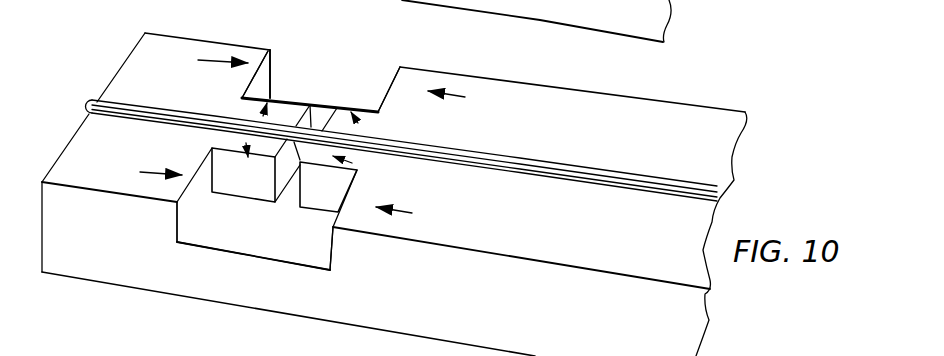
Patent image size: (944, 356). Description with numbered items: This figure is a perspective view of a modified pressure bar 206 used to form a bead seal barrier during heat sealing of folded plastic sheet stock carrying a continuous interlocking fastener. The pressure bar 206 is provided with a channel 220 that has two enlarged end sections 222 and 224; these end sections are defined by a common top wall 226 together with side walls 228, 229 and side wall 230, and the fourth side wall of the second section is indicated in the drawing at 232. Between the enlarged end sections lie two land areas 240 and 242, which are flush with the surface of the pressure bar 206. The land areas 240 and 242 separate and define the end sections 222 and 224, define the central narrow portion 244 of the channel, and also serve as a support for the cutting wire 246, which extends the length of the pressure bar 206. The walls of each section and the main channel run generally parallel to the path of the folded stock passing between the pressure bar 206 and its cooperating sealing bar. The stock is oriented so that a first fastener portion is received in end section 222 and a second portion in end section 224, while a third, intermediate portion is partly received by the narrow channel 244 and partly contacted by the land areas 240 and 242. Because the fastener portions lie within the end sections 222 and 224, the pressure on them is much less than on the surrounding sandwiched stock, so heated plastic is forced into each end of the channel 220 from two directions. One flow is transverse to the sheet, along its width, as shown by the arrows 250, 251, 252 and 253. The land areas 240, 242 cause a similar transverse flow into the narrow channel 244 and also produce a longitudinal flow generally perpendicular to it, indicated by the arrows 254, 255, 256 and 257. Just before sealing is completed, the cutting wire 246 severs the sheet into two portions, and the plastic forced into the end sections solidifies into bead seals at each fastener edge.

The pressure bar 206 is at (692, 136).
The channel 220 is at (297, 87).
The channel end section 222 is at (363, 101).
The channel end section 224 is at (238, 242).
The common top wall 226 is at (286, 250).
The side wall 228 is at (186, 213).
The side wall 229 is at (331, 250).
The side wall 230 is at (278, 45).
The notch right side wall 232 is at (400, 70).
The land area 240 is at (240, 178).
The land area 242 is at (322, 188).
The narrow portion of the channel 244 is at (313, 115).
The cutting wire 246 is at (99, 100).
The arrow 250 is at (463, 97).
The arrow 251 is at (215, 58).
The arrow 252 is at (137, 169).
The arrow 253 is at (412, 213).
The arrow 254 is at (358, 123).
The arrow 255 is at (258, 109).
The arrow 256 is at (245, 142).
The arrow 257 is at (352, 163).